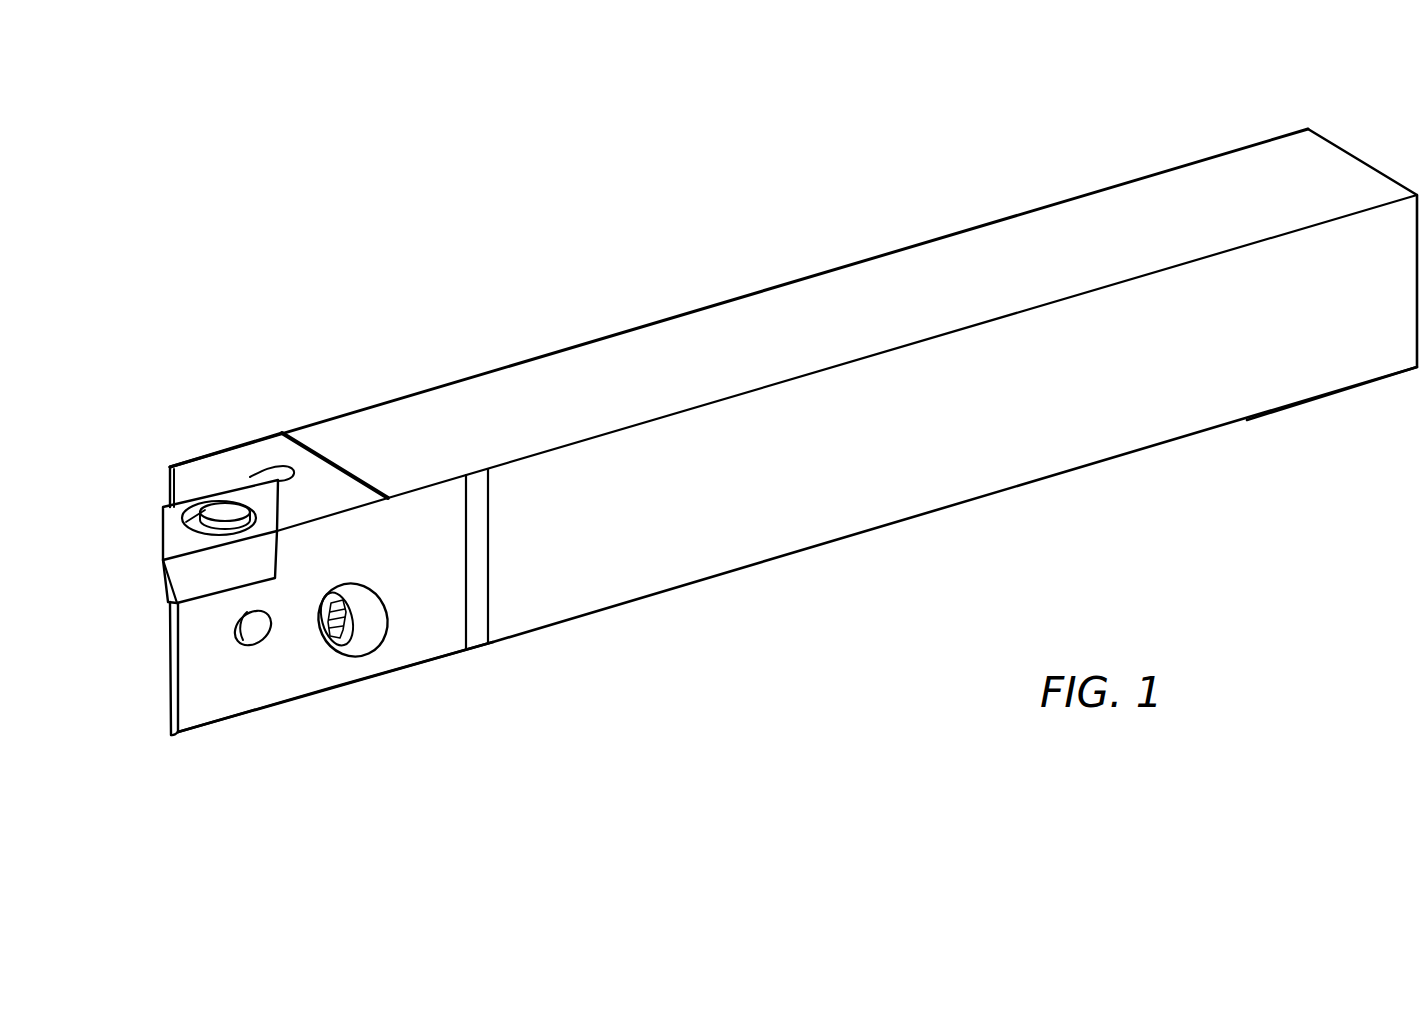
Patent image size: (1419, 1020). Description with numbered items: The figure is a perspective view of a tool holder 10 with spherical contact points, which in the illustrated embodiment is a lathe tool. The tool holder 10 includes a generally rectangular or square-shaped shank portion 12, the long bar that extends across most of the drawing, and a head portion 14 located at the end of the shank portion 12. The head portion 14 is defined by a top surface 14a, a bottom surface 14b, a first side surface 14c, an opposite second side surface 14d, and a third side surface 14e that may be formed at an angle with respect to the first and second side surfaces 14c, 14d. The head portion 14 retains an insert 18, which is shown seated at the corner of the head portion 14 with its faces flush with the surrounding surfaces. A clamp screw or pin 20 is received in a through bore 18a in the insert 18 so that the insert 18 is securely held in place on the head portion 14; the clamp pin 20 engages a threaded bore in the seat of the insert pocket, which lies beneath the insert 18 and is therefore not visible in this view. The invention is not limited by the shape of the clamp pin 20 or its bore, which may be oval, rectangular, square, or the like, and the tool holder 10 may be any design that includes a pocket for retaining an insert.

The tool holder 10 is at (465, 168).
The shank portion 12 is at (1160, 160).
The head portion 14 is at (258, 428).
The top surface 14a is at (237, 463).
The bottom surface 14b is at (298, 700).
The first side surface 14c is at (195, 458).
The second side surface 14d is at (416, 560).
The third side surface 14e is at (170, 478).
The insert 18 is at (158, 548).
The through bore 18a is at (186, 500).
The clamp screw or pin 20 is at (218, 505).